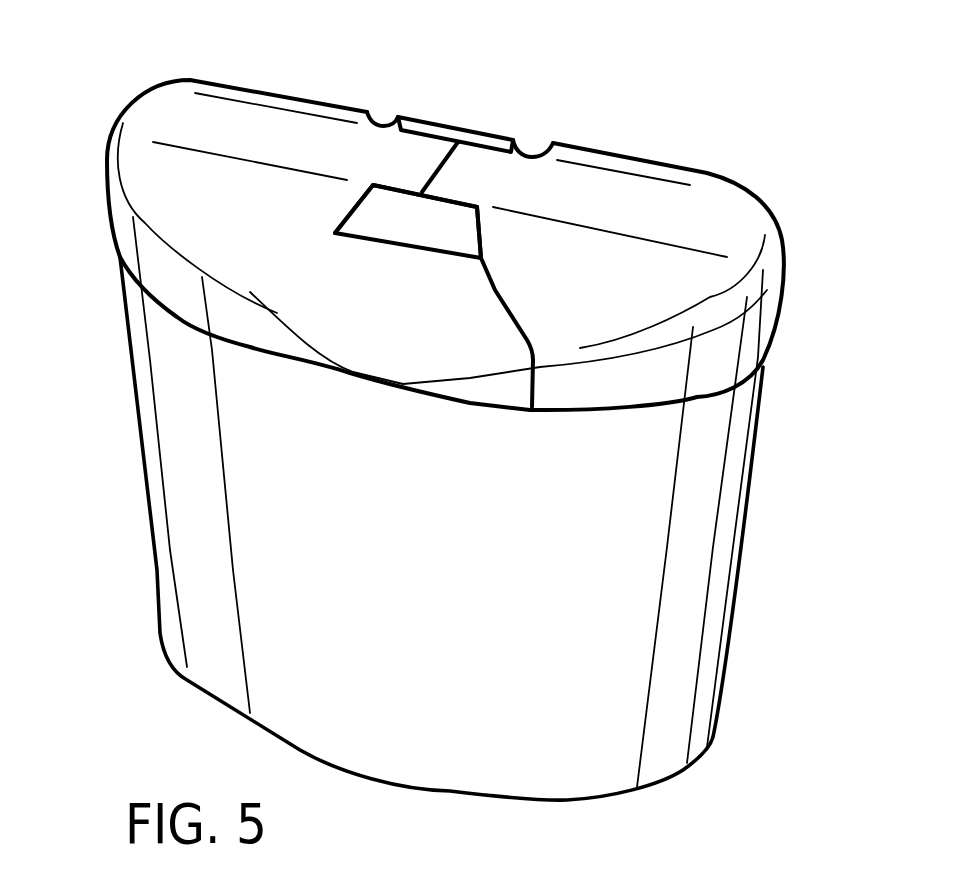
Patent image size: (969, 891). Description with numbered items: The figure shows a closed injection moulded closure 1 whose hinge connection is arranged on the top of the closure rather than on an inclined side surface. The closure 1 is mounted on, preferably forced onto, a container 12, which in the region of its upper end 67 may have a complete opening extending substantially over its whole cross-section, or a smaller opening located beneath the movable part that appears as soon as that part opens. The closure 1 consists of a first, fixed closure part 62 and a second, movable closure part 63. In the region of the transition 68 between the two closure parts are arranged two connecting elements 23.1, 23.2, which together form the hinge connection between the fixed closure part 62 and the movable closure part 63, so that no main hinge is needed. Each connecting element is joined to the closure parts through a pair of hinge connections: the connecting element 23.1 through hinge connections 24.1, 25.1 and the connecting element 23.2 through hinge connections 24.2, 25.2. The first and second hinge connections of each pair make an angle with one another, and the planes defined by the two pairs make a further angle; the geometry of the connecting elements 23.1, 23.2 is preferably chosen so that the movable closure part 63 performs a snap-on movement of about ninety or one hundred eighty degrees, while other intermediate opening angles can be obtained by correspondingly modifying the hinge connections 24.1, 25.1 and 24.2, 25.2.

The closure 1 is at (762, 92).
The container 12 is at (128, 460).
The first, fixed closure part 62 is at (262, 128).
The second, movable closure part 63 is at (622, 195).
The upper end of the container 67 is at (173, 318).
The transition between the two closure parts 68 is at (433, 163).
The connecting element 23.1 is at (472, 132).
The connecting element 23.2 is at (395, 223).
The second hinge connection 24.1 is at (353, 212).
The second hinge connection 24.2 is at (368, 112).
The first hinge connection 25.1 is at (483, 240).
The first hinge connection 25.2 is at (558, 143).